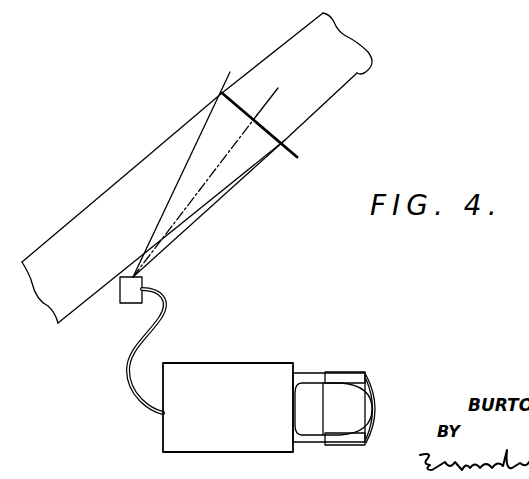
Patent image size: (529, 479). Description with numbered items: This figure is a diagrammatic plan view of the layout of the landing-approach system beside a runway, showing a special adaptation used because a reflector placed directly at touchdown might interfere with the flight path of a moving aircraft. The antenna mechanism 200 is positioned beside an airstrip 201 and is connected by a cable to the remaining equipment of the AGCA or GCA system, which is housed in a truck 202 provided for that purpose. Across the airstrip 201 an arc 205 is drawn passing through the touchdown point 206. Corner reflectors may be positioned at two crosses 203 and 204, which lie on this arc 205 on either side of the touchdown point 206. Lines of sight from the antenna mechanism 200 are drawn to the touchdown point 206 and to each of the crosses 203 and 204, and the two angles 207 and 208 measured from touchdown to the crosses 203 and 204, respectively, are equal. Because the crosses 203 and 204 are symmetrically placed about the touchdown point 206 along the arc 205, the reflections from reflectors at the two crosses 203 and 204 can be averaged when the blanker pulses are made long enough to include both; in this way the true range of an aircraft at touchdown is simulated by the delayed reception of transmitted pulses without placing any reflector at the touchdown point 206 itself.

The antenna mechanism 200 is at (118, 308).
The airstrip 201 is at (357, 74).
The truck 202 is at (265, 371).
The cross 203 is at (222, 86).
The cross 204 is at (293, 140).
The arc 205 is at (240, 99).
The touchdown point 206 is at (232, 176).
The angle 207 is at (188, 190).
The angle 208 is at (212, 189).